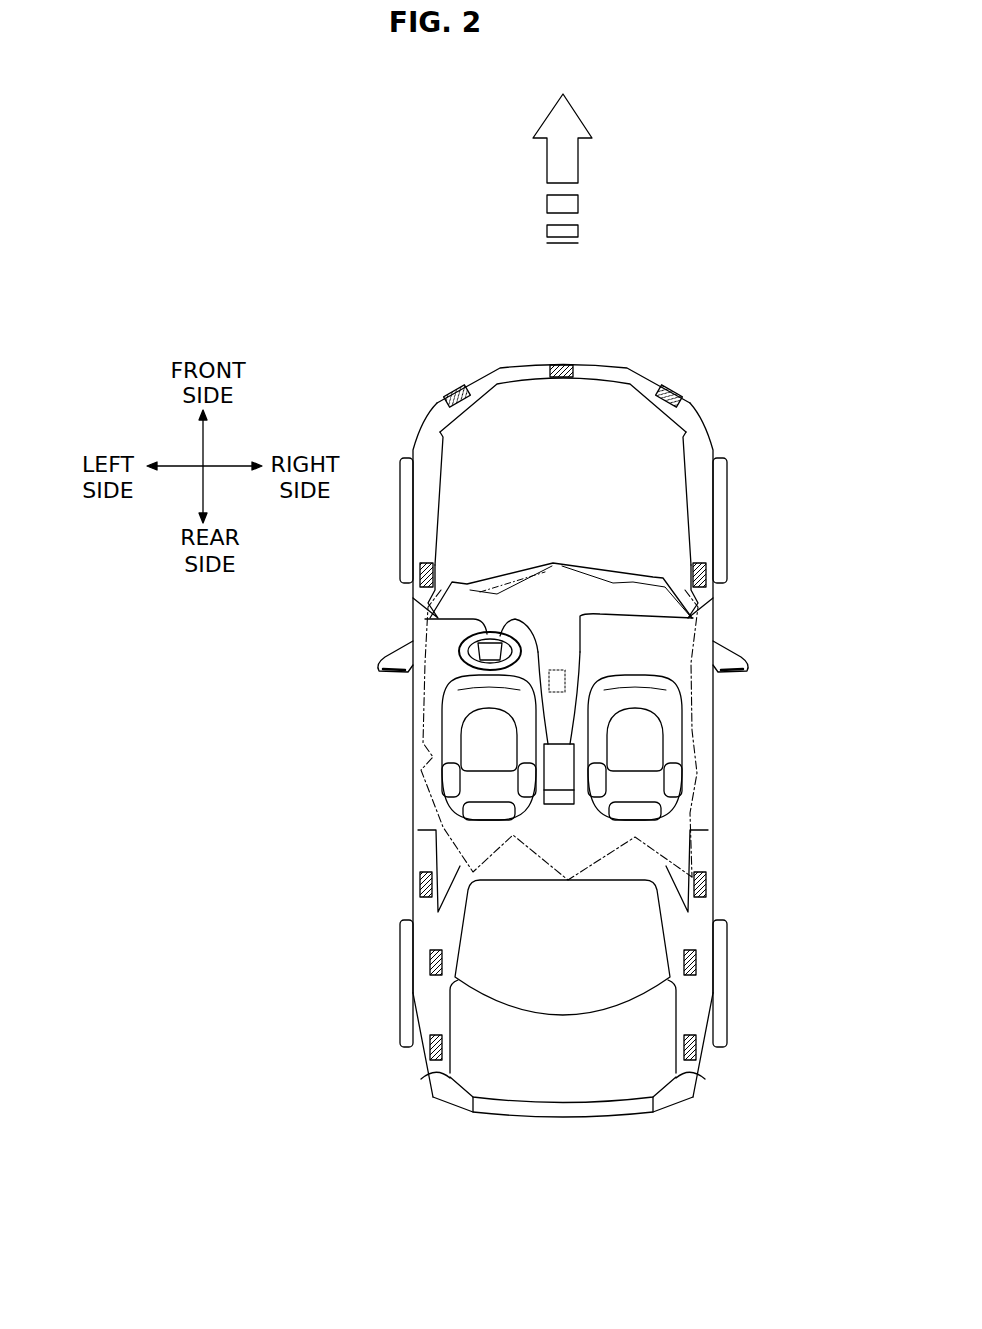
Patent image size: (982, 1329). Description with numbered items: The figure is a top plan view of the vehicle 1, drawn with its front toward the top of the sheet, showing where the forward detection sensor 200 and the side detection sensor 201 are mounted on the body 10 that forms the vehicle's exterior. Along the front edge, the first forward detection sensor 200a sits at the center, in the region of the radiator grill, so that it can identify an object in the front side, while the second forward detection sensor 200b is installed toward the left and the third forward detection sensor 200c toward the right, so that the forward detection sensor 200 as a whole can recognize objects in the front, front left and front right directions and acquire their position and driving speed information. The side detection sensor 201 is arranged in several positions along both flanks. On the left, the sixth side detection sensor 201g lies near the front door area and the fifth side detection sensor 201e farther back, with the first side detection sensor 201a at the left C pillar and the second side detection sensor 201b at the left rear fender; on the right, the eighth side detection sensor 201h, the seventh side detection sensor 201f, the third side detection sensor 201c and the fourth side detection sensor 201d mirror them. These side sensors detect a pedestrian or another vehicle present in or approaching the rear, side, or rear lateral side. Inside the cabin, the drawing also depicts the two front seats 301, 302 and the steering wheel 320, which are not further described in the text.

The vehicle 1 is at (377, 197).
The body 10 is at (411, 379).
The forward detection sensor 200 is at (667, 313).
The first forward detection sensor 200a is at (562, 364).
The second forward detection sensor 200b is at (456, 388).
The third forward detection sensor 200c is at (669, 388).
The side detection sensor 201 is at (730, 1173).
The first side detection sensor 201a is at (437, 977).
The second side detection sensor 201b is at (440, 1062).
The third side detection sensor 201c is at (689, 977).
The fourth side detection sensor 201d is at (686, 1062).
The fifth side detection sensor 201e is at (419, 885).
The seventh side detection sensor 201f is at (707, 885).
The sixth side detection sensor 201g is at (419, 572).
The eighth side detection sensor 201h is at (707, 572).
The driver seat 301 is at (447, 773).
The passenger seat 302 is at (679, 773).
The steering wheel 320 is at (447, 660).